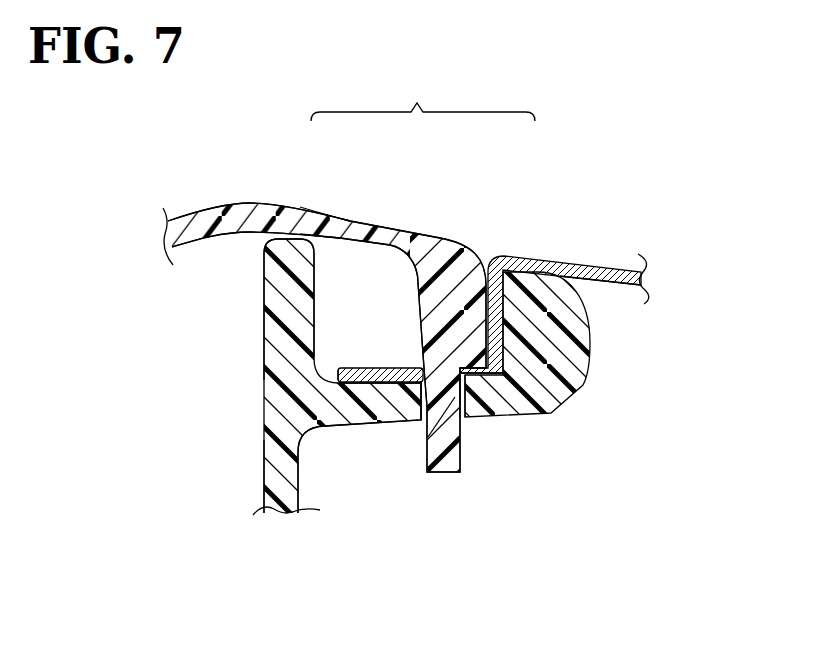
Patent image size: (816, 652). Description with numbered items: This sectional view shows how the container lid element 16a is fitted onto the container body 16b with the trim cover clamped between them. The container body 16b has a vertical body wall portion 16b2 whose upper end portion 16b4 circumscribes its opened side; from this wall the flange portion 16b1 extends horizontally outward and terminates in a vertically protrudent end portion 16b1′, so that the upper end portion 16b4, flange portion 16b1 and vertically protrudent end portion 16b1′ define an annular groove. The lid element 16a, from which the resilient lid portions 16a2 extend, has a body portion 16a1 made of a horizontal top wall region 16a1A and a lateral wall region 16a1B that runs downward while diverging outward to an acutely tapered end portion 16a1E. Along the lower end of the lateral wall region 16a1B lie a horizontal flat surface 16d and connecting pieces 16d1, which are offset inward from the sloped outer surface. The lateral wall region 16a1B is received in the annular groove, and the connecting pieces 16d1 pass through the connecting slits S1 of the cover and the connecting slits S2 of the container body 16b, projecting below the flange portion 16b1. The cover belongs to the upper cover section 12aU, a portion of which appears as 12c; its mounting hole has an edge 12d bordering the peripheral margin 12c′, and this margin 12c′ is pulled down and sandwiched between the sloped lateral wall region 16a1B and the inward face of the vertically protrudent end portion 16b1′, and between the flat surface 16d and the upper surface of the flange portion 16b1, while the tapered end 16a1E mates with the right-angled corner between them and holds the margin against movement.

The flange portion of housing 12c is at (627, 248).
The peripheral end area or margin 12c′ is at (370, 367).
The edge of the container mounting hole 12d is at (338, 367).
The upper cover section 12aU is at (622, 295).
The container lid element 16a is at (538, 223).
The body portion 16a1 is at (423, 96).
The top wall region 16a1A is at (331, 215).
The lateral wall region 16a1B is at (452, 300).
The acutely tapered end portion 16a1E is at (538, 414).
The resilient lid portion 16a2 is at (225, 201).
The container body 16b is at (318, 554).
The flange portion 16b1 is at (378, 428).
The vertically protrudent end portion 16b1′ is at (557, 351).
The vertical body wall portion 16b2 is at (267, 470).
The upper end portion 16b4 is at (262, 270).
The flat surface 16d is at (493, 377).
The connecting pieces 16d1 is at (450, 458).
The connecting slits S1 is at (443, 377).
The connecting slits S2 is at (427, 417).